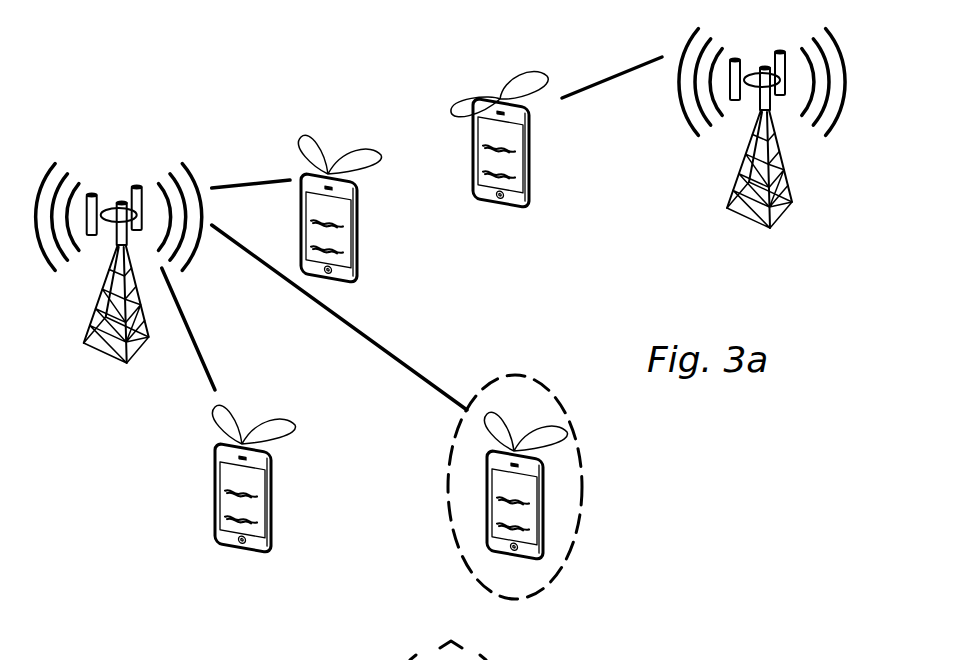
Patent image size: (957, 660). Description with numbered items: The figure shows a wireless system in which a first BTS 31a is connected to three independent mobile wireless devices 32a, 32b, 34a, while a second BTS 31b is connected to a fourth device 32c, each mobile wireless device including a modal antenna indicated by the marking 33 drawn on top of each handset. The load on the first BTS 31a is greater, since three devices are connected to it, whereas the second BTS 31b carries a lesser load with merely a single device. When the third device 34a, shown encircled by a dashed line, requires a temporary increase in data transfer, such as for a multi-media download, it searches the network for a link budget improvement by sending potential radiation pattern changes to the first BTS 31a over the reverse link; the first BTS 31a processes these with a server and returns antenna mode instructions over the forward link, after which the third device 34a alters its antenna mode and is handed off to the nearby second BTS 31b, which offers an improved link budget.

The first BTS 31a is at (100, 347).
The second BTS 31b is at (785, 210).
The mobile wireless device 32a is at (360, 243).
The mobile wireless device 32b is at (267, 495).
The fourth device 32c is at (528, 170).
The indicator (bow) attached to mobile device 33 is at (518, 84).
The third device 34a is at (583, 495).